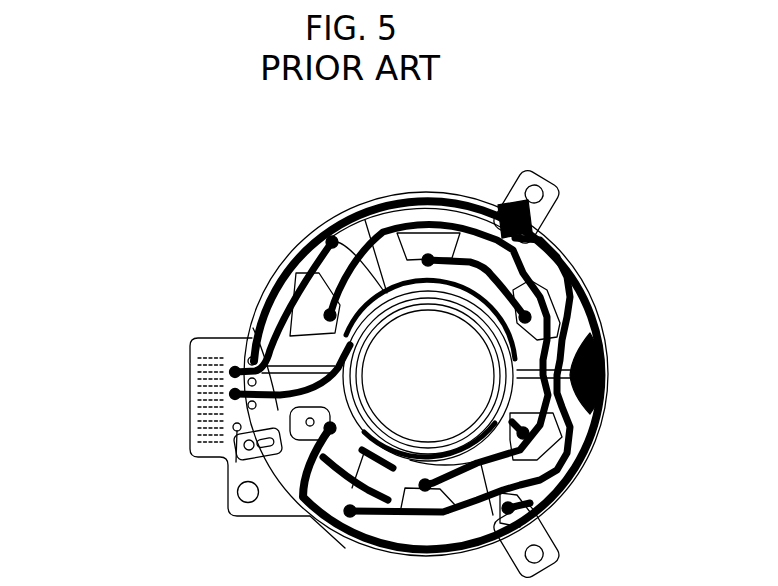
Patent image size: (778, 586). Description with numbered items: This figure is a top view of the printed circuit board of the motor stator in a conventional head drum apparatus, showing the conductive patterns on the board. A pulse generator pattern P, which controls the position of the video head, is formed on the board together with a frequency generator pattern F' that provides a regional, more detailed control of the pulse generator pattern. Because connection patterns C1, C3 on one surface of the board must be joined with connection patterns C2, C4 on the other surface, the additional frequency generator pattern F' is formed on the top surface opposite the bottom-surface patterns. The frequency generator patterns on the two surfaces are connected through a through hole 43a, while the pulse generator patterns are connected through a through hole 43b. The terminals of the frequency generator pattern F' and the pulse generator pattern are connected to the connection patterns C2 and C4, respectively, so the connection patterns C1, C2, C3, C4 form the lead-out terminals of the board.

The through hole 43a is at (250, 458).
The through hole 43b is at (302, 372).
The FG pattern F' is at (388, 374).
The PG pattern P is at (223, 459).
The connection pattern C1 is at (196, 438).
The connection pattern C2 is at (196, 428).
The connection pattern C3 is at (196, 420).
The connection pattern C4 is at (196, 402).